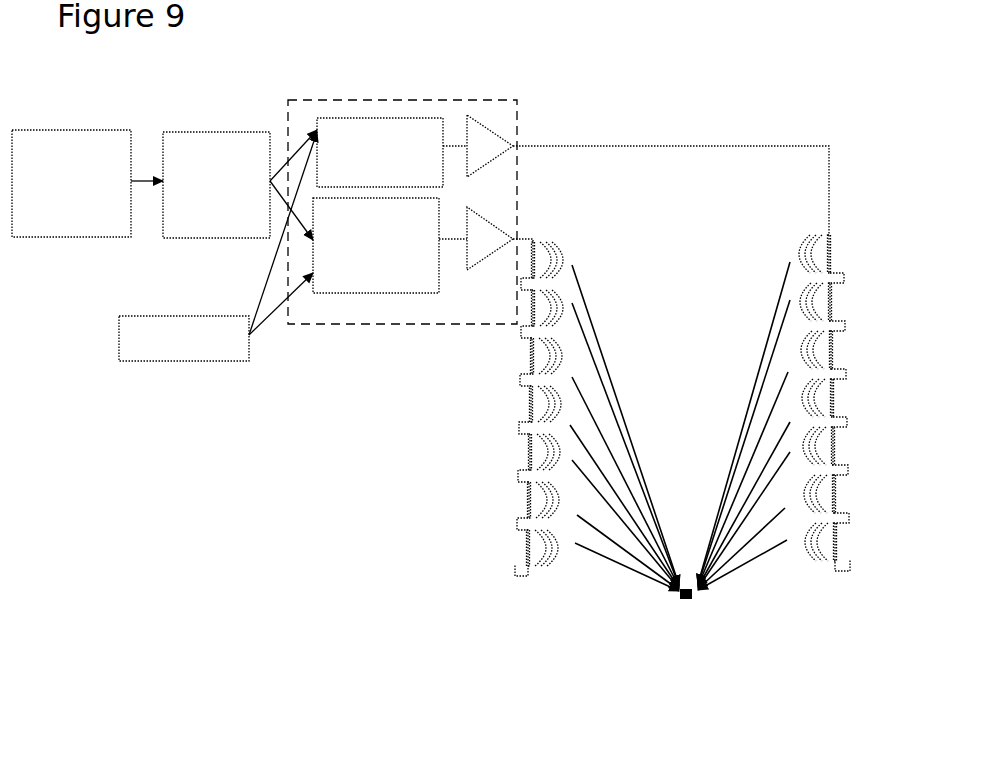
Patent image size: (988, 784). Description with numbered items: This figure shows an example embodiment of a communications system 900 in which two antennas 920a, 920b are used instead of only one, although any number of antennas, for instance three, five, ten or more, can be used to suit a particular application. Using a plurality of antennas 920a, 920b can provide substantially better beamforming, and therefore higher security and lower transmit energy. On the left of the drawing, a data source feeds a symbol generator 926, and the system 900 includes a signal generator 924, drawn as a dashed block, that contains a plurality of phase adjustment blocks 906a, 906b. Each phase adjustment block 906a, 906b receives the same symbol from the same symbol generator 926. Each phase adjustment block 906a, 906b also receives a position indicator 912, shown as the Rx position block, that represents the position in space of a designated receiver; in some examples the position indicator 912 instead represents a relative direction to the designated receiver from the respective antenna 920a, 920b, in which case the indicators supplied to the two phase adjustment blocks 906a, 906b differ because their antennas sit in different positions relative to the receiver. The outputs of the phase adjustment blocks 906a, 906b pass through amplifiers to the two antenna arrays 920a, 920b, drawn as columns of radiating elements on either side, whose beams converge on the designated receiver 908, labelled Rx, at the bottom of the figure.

The communications system 900 is at (297, 478).
The symbol generator 926 is at (201, 130).
The position indicator 912 is at (188, 361).
The signal generator 924 is at (520, 130).
The phase adjustment block 906a is at (340, 118).
The phase adjustment block 906b is at (402, 293).
The antenna 920a is at (511, 593).
The antenna 920b is at (833, 580).
The receiver Rx 908 is at (673, 605).